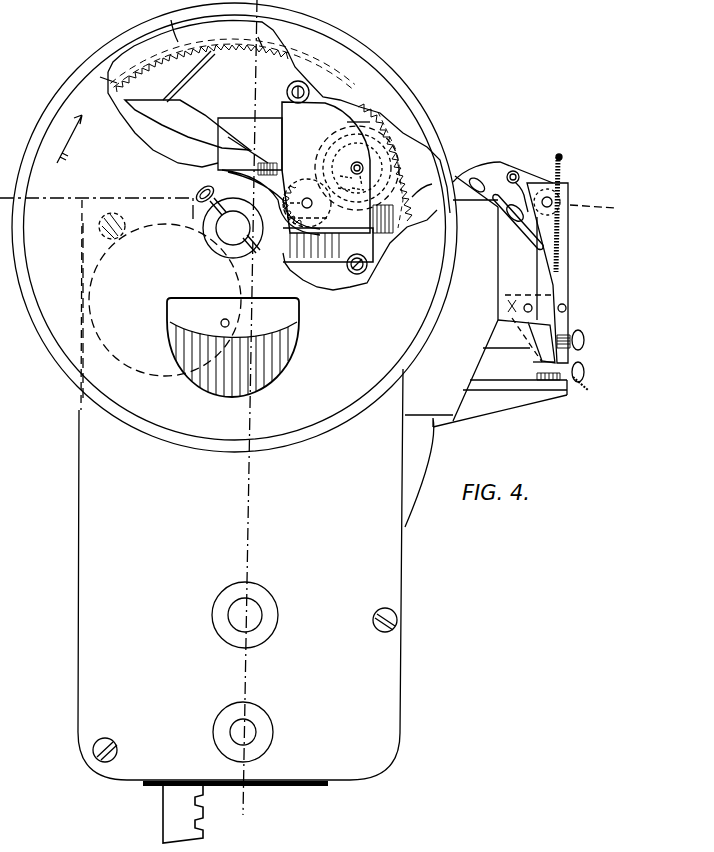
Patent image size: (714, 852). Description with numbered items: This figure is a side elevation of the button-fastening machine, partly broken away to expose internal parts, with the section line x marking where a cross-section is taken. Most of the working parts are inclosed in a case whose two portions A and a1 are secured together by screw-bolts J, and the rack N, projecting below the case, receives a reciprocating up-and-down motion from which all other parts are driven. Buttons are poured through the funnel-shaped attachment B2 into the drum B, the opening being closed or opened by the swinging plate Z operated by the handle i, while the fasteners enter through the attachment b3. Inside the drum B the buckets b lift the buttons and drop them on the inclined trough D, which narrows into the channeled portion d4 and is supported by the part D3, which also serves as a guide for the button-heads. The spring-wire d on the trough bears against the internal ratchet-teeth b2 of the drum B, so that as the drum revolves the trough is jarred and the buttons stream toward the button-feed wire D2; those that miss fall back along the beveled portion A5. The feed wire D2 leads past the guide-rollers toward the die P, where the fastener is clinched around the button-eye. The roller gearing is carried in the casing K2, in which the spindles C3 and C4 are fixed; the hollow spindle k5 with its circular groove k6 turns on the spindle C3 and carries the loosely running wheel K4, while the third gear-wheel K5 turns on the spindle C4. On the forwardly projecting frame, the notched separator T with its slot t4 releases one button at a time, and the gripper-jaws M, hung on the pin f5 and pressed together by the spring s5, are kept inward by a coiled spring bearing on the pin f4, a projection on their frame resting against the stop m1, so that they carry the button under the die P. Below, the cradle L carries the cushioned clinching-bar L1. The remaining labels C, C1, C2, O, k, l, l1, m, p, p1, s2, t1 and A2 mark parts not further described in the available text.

The case portion A is at (264, 407).
The frame portion A2 is at (226, 89).
The beveled portion A5 is at (328, 251).
The drum B is at (234, 227).
The funnel-shaped attachment B2 is at (233, 347).
The shaft hub C is at (233, 228).
The shaft hub C1 is at (245, 615).
The shaft hub C2 is at (243, 732).
The spindle C3 is at (355, 165).
The spindle C4 is at (307, 203).
The inclined trough D is at (187, 125).
The button-feed wire D2 is at (568, 345).
The trough support and guide D3 is at (342, 217).
The screw-bolt J is at (99, 226).
The casing K2 is at (337, 157).
The loosely-running gear wheel K4 is at (385, 166).
The third gear-wheel K5 is at (346, 168).
The pinion k is at (357, 168).
The hollow spindle k5 is at (345, 189).
The circular groove k6 is at (361, 189).
The cradle L is at (429, 471).
The clinching-bar L1 is at (500, 373).
The gripper-jaw M is at (547, 273).
The rack N is at (183, 814).
The slide plate O is at (519, 341).
The die P is at (543, 372).
The notched separator T is at (518, 224).
The swinging plate Z is at (94, 262).
The case portion a1 is at (467, 197).
The bucket b is at (271, 108).
The internal ratchet-teeth b2 is at (222, 53).
The funnel-shaped attachment b3 is at (271, 195).
The spring-wire d is at (186, 78).
The channeled portion d4 is at (262, 154).
The pin f4 is at (515, 170).
The pin f5 is at (553, 200).
The handle i is at (221, 322).
The ledge l is at (520, 392).
The ledge edge l1 is at (572, 390).
The pin m is at (566, 307).
The stop m1 is at (565, 177).
The pin p is at (529, 328).
The key p1 is at (200, 190).
The stud s2 is at (484, 185).
The spring s5 is at (560, 240).
The lug t1 is at (498, 207).
The slot t4 is at (537, 242).
The section line x is at (241, 819).